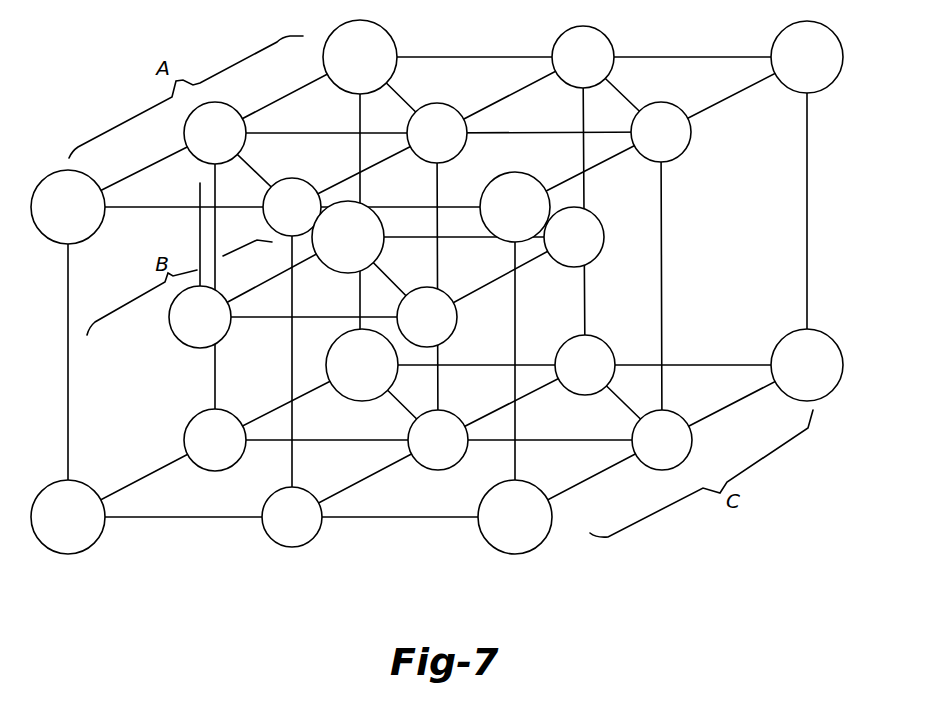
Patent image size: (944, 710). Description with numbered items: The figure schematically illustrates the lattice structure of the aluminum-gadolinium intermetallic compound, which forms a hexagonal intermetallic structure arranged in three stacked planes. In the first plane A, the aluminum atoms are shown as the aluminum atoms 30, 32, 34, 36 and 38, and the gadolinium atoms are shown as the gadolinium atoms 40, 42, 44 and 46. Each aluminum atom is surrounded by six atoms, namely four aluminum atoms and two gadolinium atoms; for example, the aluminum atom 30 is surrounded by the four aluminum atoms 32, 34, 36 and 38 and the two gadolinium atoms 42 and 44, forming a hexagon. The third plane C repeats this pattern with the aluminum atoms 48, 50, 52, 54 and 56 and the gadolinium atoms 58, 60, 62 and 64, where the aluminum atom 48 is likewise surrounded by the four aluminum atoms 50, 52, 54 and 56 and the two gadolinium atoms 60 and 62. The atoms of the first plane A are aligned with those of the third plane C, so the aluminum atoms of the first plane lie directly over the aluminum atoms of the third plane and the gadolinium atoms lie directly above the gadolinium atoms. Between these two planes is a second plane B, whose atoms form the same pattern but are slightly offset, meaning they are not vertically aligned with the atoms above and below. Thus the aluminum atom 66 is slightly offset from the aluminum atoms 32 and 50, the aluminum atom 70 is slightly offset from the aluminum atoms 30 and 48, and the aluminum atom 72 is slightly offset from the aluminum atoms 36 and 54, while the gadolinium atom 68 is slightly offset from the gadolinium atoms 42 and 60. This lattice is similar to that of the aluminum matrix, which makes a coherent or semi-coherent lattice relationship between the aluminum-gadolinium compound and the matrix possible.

The aluminum atom 30 is at (437, 133).
The aluminum atom 32 is at (215, 133).
The aluminum atom 34 is at (292, 207).
The aluminum atom 36 is at (583, 57).
The aluminum atom 38 is at (661, 132).
The gadolinium atom 40 is at (68, 207).
The gadolinium atom 42 is at (360, 57).
The gadolinium atom 44 is at (515, 207).
The gadolinium atom 46 is at (807, 57).
The aluminum atom 48 is at (438, 440).
The aluminum atom 50 is at (215, 440).
The aluminum atom 52 is at (292, 517).
The aluminum atom 54 is at (585, 365).
The aluminum atom 56 is at (662, 440).
The gadolinium atom 58 is at (68, 517).
The gadolinium atom 60 is at (362, 365).
The gadolinium atom 62 is at (515, 517).
The gadolinium atom 64 is at (807, 365).
The aluminum atom 66 is at (200, 317).
The gadolinium atom 68 is at (348, 237).
The aluminum atom 70 is at (427, 317).
The aluminum atom 72 is at (574, 237).